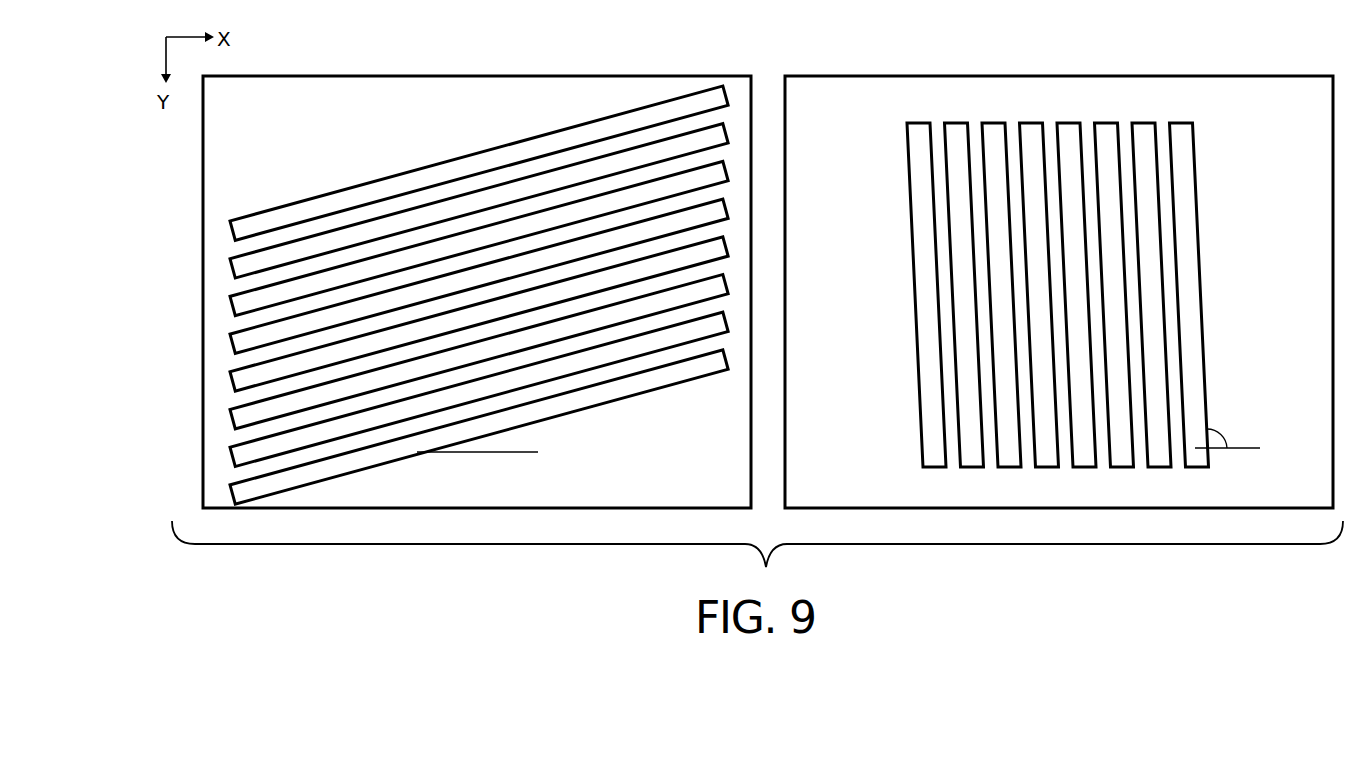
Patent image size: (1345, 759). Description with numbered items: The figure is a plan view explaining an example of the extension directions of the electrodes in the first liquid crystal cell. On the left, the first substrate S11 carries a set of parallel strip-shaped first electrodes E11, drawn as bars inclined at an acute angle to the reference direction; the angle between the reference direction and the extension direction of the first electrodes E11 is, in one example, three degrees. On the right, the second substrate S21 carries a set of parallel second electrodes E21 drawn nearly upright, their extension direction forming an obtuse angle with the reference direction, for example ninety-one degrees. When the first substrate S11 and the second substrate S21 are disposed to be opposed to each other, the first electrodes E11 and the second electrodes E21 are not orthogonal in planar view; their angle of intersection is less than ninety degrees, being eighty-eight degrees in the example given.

The first substrate S11 is at (672, 76).
The first electrodes E11 is at (675, 383).
The second substrate S21 is at (1255, 76).
The second electrodes E21 is at (1199, 270).